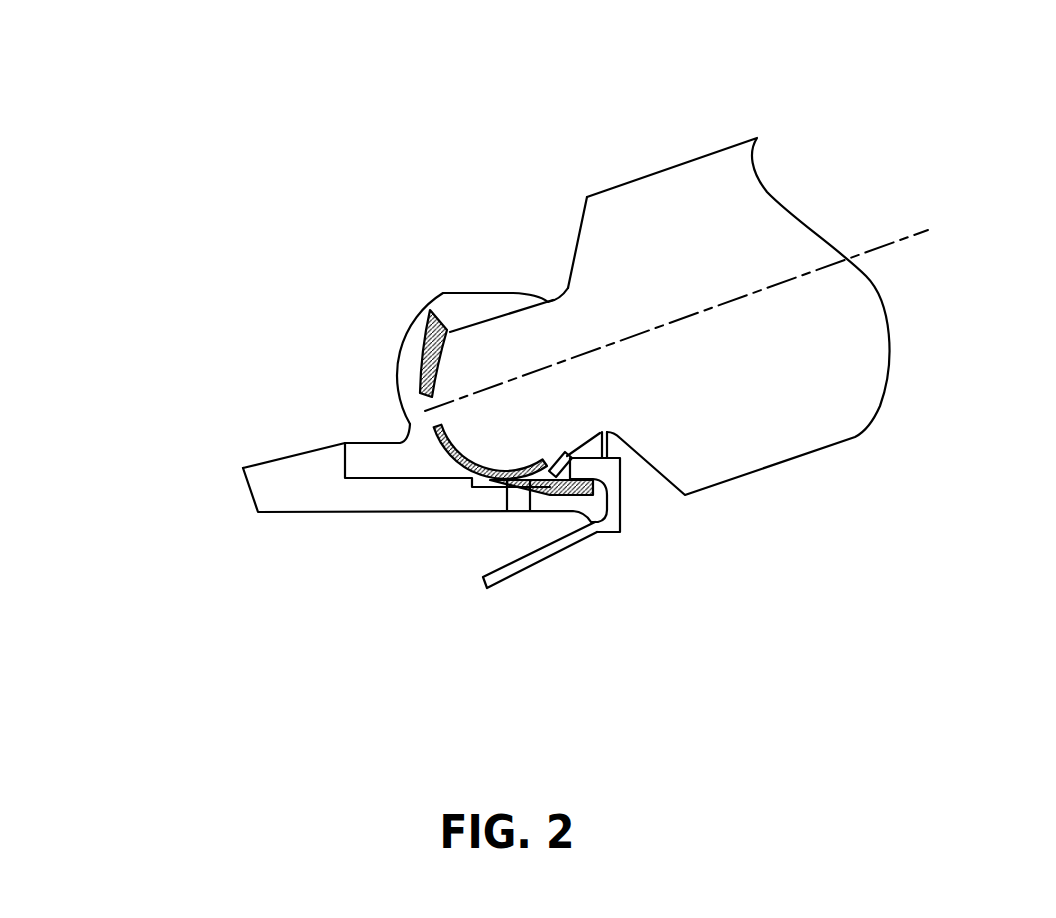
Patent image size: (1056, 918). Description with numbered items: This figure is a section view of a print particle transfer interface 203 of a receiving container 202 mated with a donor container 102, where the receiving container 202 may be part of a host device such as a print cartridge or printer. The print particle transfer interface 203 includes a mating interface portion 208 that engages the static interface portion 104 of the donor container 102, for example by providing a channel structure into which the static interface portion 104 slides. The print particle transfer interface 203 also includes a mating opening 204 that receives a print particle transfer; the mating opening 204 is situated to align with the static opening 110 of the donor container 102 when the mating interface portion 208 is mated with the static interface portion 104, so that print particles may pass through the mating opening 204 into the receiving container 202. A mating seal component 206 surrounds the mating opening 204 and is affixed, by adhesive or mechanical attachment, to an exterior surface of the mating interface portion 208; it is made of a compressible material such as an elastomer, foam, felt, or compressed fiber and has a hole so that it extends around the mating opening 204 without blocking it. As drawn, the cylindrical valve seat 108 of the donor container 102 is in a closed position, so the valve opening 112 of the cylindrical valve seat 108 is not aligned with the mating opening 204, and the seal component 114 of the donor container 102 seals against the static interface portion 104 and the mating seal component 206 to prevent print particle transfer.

The donor container 102 is at (849, 74).
The static interface portion 104 is at (368, 442).
The cylindrical valve seat 108 is at (487, 327).
The static opening 110 is at (528, 468).
The valve opening 112 is at (433, 425).
The seal component 114 is at (430, 350).
The receiving container 202 is at (230, 583).
The print particle transfer interface 203 is at (800, 535).
The mating opening 204 is at (510, 512).
The mating seal component 206 is at (547, 474).
The mating interface portion 208 is at (273, 462).